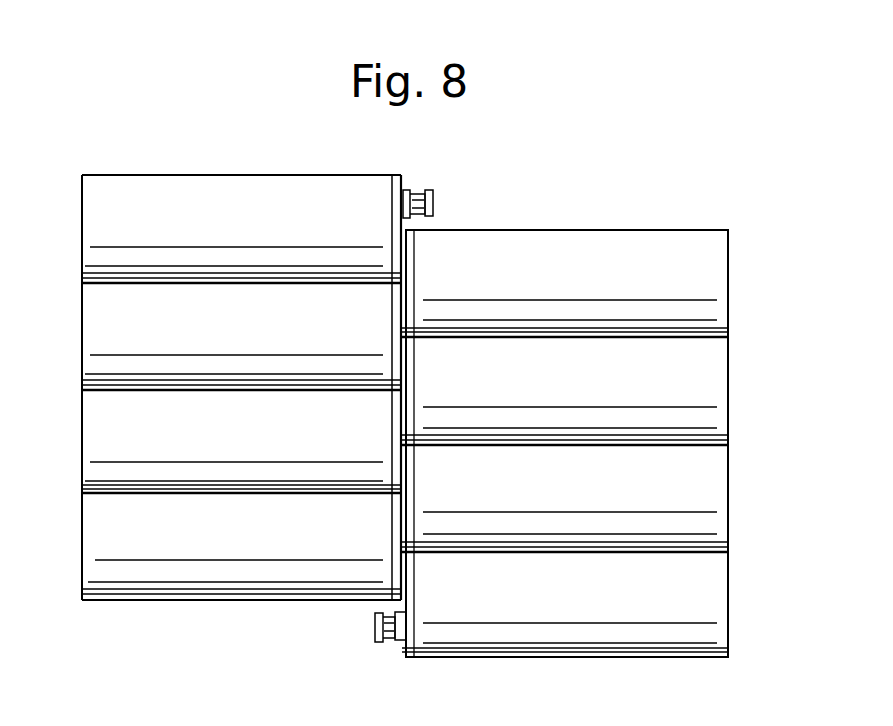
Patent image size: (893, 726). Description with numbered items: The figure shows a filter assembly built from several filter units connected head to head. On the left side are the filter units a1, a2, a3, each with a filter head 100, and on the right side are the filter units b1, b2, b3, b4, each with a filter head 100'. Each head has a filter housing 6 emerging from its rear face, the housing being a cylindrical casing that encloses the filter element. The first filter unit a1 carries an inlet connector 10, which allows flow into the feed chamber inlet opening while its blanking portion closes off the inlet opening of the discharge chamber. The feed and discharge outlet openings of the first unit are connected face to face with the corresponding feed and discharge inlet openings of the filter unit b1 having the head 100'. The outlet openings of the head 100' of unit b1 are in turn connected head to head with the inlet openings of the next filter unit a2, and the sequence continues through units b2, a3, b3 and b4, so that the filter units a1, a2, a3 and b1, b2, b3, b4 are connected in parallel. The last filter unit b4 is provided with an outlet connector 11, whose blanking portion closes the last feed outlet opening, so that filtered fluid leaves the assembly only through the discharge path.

The first filter unit a1 is at (91, 217).
The filter unit a2 is at (91, 338).
The filter unit a3 is at (91, 446).
The filter unit b1 is at (712, 279).
The filter unit b2 is at (712, 389).
The filter unit b3 is at (712, 497).
The last filter unit b4 is at (712, 607).
The filter housing 6 is at (565, 250).
The inlet connector 10 is at (435, 205).
The outlet connector 11 is at (375, 632).
The filter head 100 is at (358, 387).
The filter head 100' is at (452, 443).